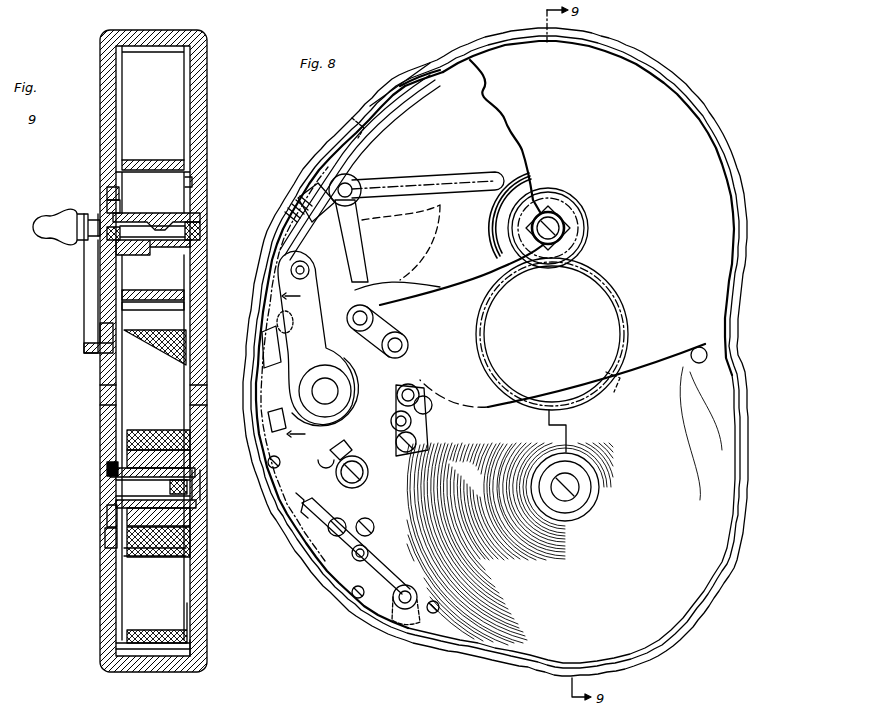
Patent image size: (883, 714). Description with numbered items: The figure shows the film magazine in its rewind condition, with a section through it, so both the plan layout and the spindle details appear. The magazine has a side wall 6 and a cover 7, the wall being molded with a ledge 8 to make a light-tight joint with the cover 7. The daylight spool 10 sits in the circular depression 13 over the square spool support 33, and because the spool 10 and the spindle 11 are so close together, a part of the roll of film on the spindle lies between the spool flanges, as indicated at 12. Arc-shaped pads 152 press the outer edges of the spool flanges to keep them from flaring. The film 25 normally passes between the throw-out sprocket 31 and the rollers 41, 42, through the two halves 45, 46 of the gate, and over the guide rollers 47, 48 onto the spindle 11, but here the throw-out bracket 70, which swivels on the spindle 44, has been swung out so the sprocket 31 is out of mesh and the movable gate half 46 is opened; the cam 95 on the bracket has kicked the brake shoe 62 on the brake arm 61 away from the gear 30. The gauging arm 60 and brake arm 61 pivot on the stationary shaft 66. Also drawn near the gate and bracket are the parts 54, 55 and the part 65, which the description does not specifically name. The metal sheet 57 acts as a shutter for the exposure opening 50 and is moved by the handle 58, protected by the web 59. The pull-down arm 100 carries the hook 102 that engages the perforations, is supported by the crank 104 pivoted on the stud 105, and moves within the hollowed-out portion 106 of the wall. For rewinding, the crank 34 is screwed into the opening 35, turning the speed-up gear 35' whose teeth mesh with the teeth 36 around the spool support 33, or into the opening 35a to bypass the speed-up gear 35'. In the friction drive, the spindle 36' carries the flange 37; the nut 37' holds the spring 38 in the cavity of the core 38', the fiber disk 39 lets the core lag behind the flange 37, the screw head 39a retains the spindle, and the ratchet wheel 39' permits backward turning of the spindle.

In FIG. 9, the side wall 6 is at (135, 673).
In FIG. 9, the cover 7 is at (205, 615).
In FIG. 9, the ledge 8 is at (190, 673).
In FIG. 9, the daylight spool 10 is at (187, 107).
In FIG. 8, the daylight spool 10 is at (658, 103).
In FIG. 8, the spindle 11 is at (598, 486).
In FIG. 8, the part of the roll of film on the spindle 12 is at (648, 368).
In FIG. 8, the circular depression 13 is at (710, 330).
In FIG. 8, the film 25 is at (470, 327).
In FIG. 8, the gear 30 is at (420, 318).
In FIG. 8, the throw-out sprocket 31 is at (300, 390).
In FIG. 9, the square spool support 33 is at (185, 212).
In FIG. 8, the square spool support 33 is at (565, 238).
In FIG. 9, the crank 34 is at (84, 275).
In FIG. 9, the opening 35 is at (75, 338).
In FIG. 9, the speed-up gear 35' is at (113, 447).
In FIG. 9, the opening 35a is at (200, 228).
In FIG. 9, the teeth 36 is at (126, 194).
In FIG. 9, the spindle 36' is at (180, 505).
In FIG. 9, the flange 37 is at (82, 539).
In FIG. 9, the nut 37' is at (187, 532).
In FIG. 9, the spring 38 is at (176, 467).
In FIG. 9, the core 38' is at (185, 449).
In FIG. 9, the fiber disk 39 is at (82, 516).
In FIG. 9, the ratchet wheel 39' is at (82, 467).
In FIG. 9, the screw head 39a is at (205, 484).
In FIG. 8, the roller 41 is at (398, 345).
In FIG. 8, the roller 42 is at (368, 315).
In FIG. 8, the spindle 44 is at (283, 254).
In FIG. 8, the gate half 45 is at (270, 420).
In FIG. 8, the gate half 46 is at (268, 463).
In FIG. 8, the guide roller 47 is at (420, 430).
In FIG. 8, the guide roller 48 is at (428, 408).
In FIG. 8, the opening 50 is at (262, 355).
In FIG. 8, the roller 54 is at (430, 420).
In FIG. 8, the screw 55 is at (418, 447).
In FIG. 8, the metal sheet 57 is at (421, 86).
In FIG. 8, the handle 58 is at (357, 120).
In FIG. 8, the web 59 is at (384, 104).
In FIG. 8, the arm 60 is at (458, 173).
In FIG. 8, the brake arm 61 is at (358, 215).
In FIG. 8, the brake shoe 62 is at (395, 283).
In FIG. 8, the lever arm 65 is at (299, 200).
In FIG. 8, the shaft 66 is at (329, 176).
In FIG. 8, the throw-out bracket 70 is at (275, 282).
In FIG. 8, the cam 95 is at (290, 214).
In FIG. 8, the pull-down arm 100 is at (345, 545).
In FIG. 8, the hook 102 is at (302, 510).
In FIG. 8, the crank 104 is at (368, 553).
In FIG. 8, the stud 105 is at (374, 527).
In FIG. 8, the hollowed-out portion 106 is at (300, 535).
In FIG. 9, the arc-shaped pads 152 is at (100, 395).
In FIG. 8, the arc-shaped pads 152 is at (620, 390).